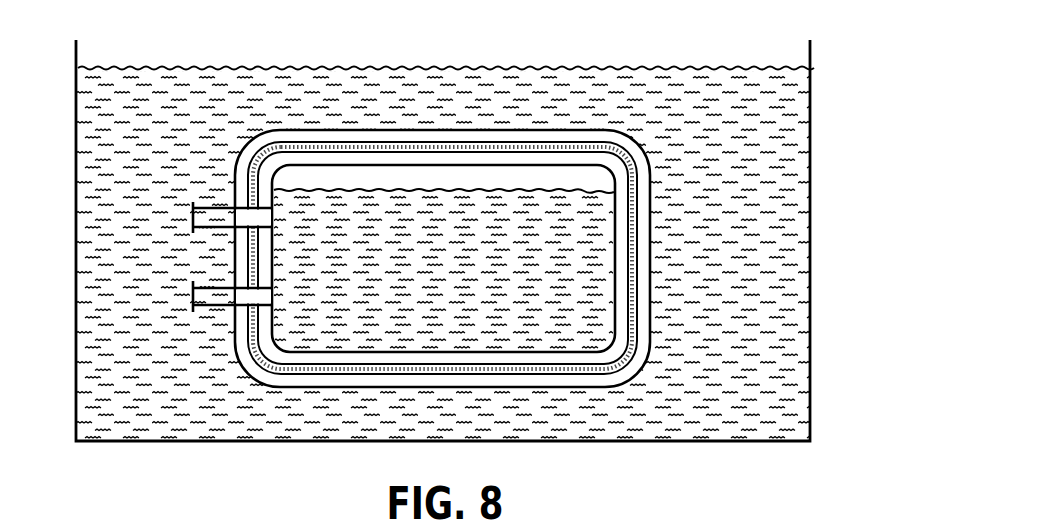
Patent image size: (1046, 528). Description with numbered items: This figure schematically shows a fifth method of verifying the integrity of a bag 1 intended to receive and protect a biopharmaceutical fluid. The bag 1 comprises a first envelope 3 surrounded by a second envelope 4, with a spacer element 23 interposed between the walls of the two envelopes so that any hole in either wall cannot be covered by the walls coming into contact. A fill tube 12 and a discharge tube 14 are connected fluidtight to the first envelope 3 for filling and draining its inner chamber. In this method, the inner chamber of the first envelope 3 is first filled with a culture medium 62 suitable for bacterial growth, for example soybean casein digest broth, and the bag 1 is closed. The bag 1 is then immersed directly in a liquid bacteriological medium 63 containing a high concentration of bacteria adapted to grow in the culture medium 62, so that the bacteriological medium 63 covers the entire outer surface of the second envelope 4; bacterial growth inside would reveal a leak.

The bag 1 is at (668, 99).
The first envelope 3 is at (570, 352).
The second envelope 4 is at (637, 382).
The fill tube 12 is at (215, 218).
The discharge tube 14 is at (215, 300).
The spacer element 23 is at (466, 258).
The culture medium 62 is at (378, 217).
The bacteriological medium 63 is at (760, 222).